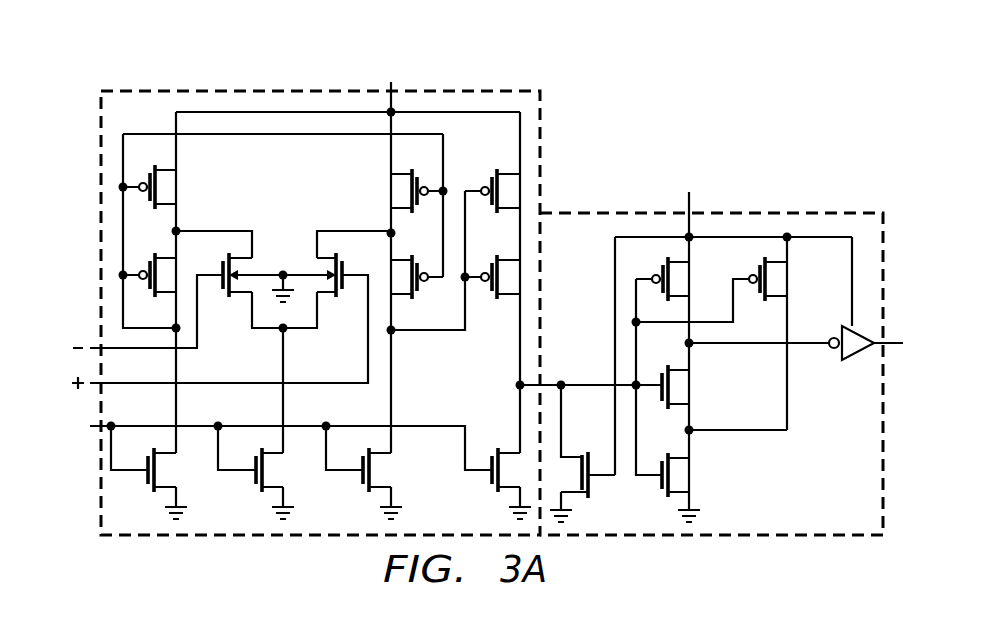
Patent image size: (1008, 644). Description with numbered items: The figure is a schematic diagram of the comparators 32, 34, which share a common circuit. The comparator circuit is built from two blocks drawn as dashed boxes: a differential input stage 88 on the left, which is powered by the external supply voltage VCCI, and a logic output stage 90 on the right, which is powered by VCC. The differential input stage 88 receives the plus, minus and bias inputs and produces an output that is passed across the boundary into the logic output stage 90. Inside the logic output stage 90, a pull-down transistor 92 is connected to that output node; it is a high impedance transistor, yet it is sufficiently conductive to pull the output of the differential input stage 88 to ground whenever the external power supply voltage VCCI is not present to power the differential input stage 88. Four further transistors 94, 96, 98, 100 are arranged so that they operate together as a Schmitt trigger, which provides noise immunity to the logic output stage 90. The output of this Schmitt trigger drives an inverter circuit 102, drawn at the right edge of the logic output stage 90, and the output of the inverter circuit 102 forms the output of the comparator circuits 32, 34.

The comparator 32 is at (108, 50).
The comparator 34 is at (104, 72).
The differential input stage 88 is at (542, 146).
The logic output stage 90 is at (773, 213).
The pull-down transistor 92 is at (590, 484).
The transistor 94 is at (680, 474).
The transistor 96 is at (682, 388).
The transistor 98 is at (680, 281).
The transistor 100 is at (776, 282).
The inverter circuit 102 is at (852, 363).